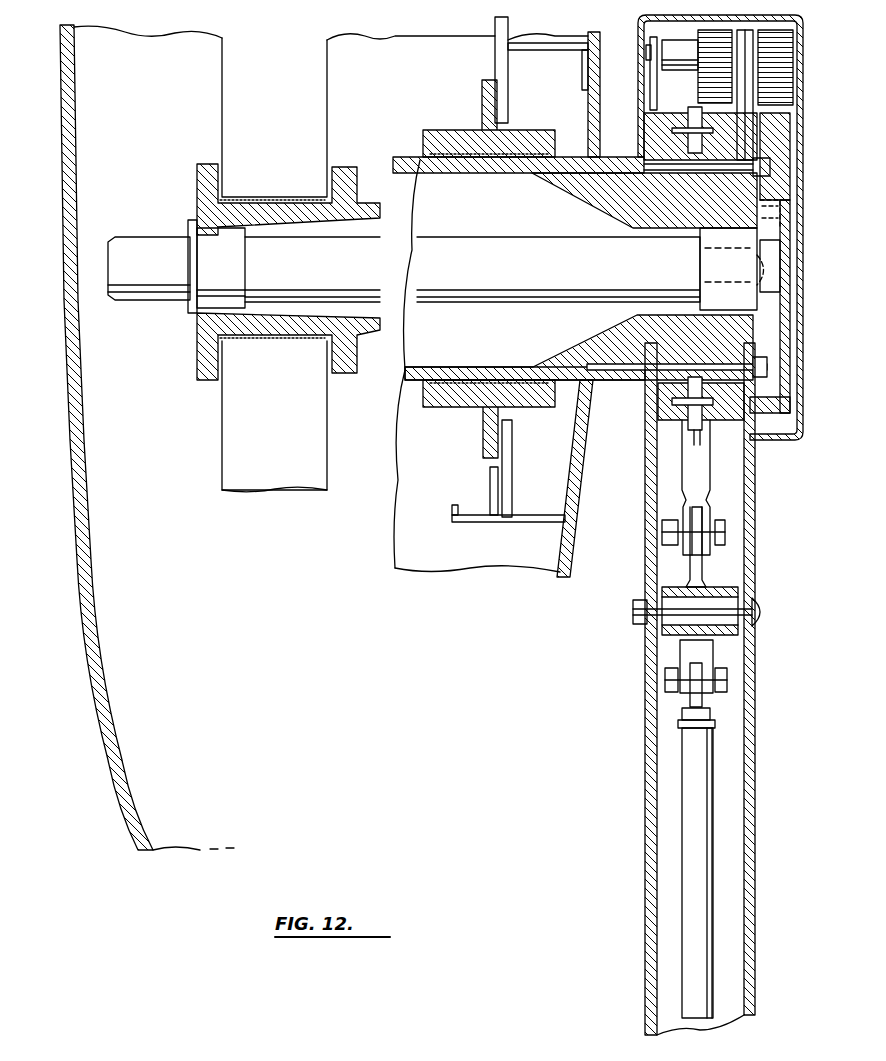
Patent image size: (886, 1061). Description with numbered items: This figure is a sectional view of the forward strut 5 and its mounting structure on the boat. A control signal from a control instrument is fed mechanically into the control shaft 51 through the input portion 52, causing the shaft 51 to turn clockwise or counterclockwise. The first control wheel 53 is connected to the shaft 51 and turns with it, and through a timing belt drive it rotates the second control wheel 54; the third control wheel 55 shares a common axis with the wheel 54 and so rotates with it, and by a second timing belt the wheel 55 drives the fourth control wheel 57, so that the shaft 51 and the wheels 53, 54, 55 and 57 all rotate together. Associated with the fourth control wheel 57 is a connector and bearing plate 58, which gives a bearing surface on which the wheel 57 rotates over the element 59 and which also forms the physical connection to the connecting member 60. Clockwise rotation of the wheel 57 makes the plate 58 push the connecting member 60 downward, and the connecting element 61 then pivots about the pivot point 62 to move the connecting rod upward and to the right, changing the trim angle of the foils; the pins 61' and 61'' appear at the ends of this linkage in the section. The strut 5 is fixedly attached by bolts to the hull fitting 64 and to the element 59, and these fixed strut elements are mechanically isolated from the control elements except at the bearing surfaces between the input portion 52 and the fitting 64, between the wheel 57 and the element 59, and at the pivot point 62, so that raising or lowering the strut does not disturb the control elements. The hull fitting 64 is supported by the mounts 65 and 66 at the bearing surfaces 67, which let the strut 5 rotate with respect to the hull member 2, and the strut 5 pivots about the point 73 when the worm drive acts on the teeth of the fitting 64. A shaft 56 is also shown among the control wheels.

The hull member 2 is at (72, 512).
The strut 5 is at (752, 582).
The control shaft 51 is at (505, 245).
The input portion 52 is at (155, 300).
The first control wheel 53 is at (785, 220).
The second control wheel 54 is at (783, 50).
The third control wheel 55 is at (710, 52).
The gear shaft 56 is at (672, 50).
The fourth control wheel 57 is at (727, 138).
The connector and bearing plate 58 is at (705, 430).
The element 59 is at (640, 200).
The connecting member 60 is at (697, 468).
The connecting element 61 is at (654, 607).
The pivot pin 61' is at (729, 666).
The pivot pin 61'' is at (726, 522).
The pivot point 62 is at (765, 615).
The hull fitting 64 is at (205, 180).
The mounts 65 is at (450, 130).
The mounts 66 is at (310, 150).
The bearing surfaces 67 is at (283, 200).
The pivot point 73 is at (768, 300).